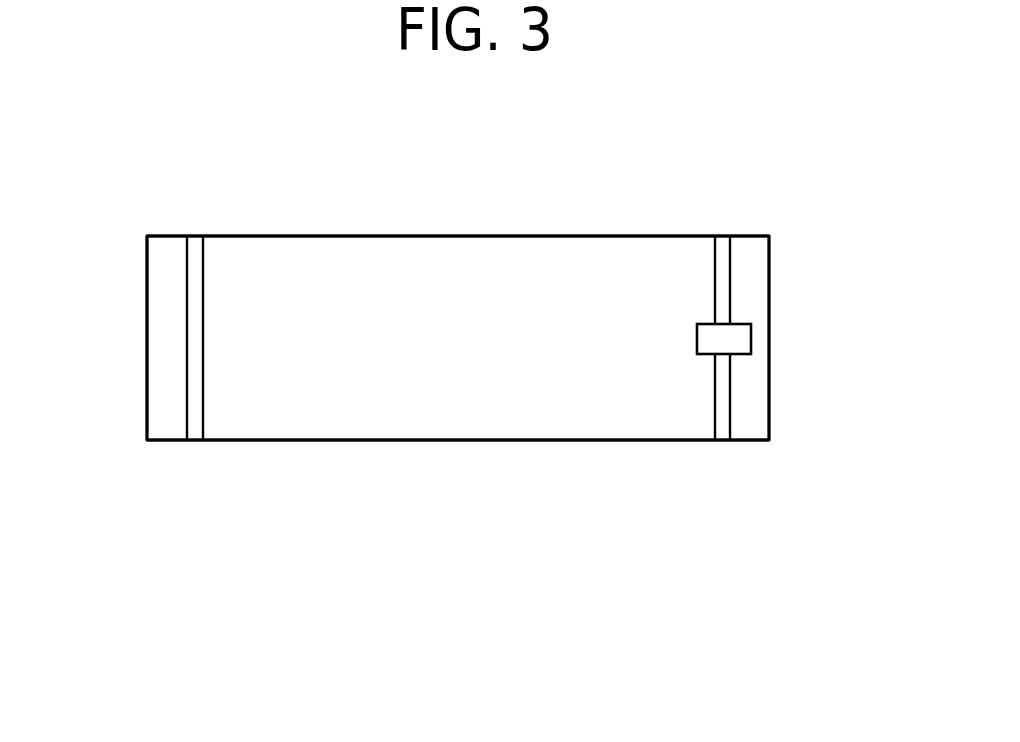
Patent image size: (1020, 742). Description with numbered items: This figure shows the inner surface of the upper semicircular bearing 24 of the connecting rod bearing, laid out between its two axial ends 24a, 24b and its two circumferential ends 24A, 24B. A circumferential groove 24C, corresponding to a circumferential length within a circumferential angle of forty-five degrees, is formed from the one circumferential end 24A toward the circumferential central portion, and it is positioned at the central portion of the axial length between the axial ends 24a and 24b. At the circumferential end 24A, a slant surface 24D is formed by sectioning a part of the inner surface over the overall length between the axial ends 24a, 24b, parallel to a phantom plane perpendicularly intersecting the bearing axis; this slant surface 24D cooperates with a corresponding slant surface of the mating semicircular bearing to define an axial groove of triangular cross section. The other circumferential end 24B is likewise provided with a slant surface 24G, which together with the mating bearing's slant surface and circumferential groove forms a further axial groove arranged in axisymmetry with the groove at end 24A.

The semicircular bearing 24 is at (479, 357).
The axial end 24a is at (500, 236).
The axial end 24b is at (492, 440).
The circumferential end 24A is at (762, 393).
The circumferential end 24B is at (155, 383).
The circumferential groove 24C is at (697, 342).
The slant surface 24D is at (720, 440).
The slant surface 24G is at (192, 440).